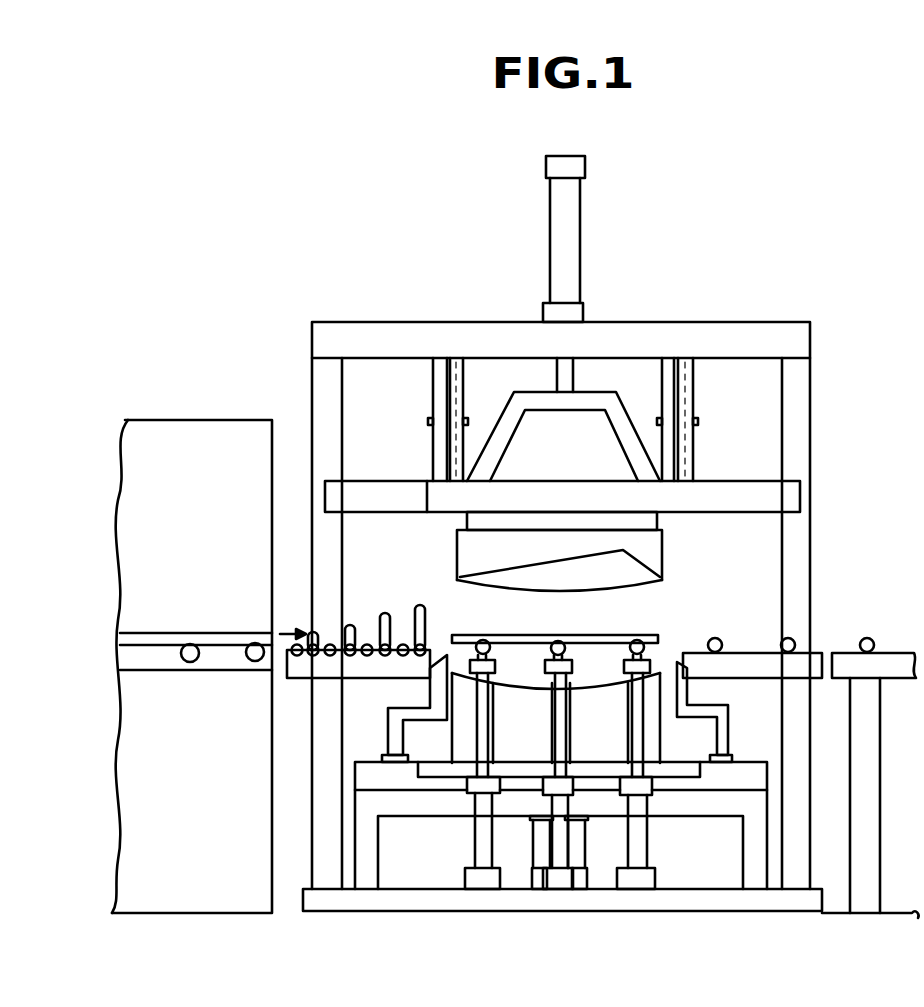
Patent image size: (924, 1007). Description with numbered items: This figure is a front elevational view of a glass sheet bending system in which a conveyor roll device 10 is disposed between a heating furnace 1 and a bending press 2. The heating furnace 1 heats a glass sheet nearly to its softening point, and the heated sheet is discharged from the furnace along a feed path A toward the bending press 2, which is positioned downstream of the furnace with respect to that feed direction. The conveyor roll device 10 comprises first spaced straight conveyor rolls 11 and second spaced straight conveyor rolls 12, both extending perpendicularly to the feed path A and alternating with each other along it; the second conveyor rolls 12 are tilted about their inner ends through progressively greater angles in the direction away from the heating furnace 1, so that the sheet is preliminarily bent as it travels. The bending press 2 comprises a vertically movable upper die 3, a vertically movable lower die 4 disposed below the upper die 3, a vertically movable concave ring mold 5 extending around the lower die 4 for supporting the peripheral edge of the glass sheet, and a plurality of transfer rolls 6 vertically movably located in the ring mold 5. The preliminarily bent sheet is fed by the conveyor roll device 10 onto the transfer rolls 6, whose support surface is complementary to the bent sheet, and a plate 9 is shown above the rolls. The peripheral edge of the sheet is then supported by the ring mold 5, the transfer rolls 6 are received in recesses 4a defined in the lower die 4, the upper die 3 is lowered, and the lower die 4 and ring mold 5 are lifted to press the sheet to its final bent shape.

The heating furnace 1 is at (188, 426).
The bending press 2 is at (818, 307).
The upper die 3 is at (655, 556).
The lower die 4 is at (672, 690).
The recesses 4a is at (486, 724).
The concave ring mold 5 is at (688, 680).
The transfer rolls 6 is at (640, 646).
The plate 9 is at (542, 635).
The conveyor roll device 10 is at (382, 602).
The first conveyor rolls 11 is at (312, 654).
The second conveyor rolls 12 is at (415, 615).
The feed path A is at (283, 631).